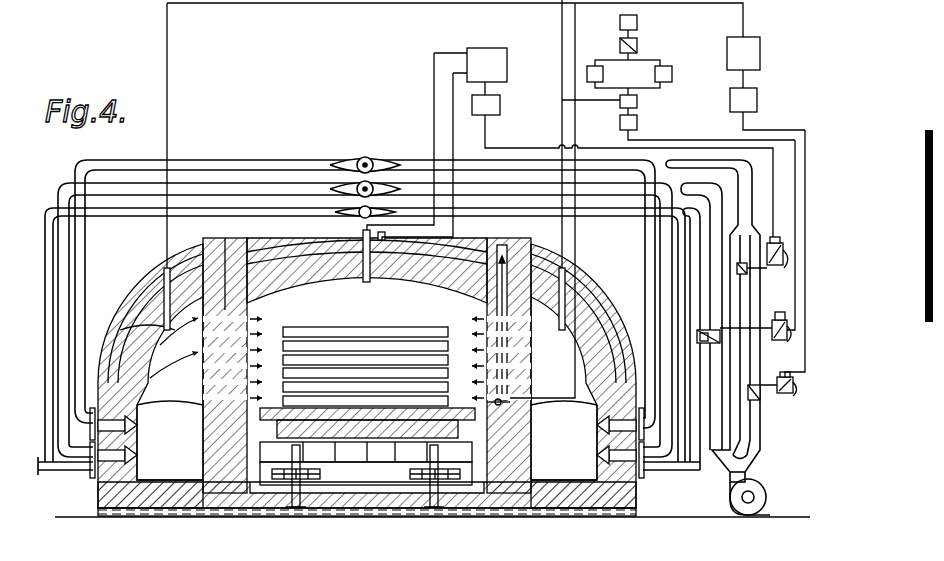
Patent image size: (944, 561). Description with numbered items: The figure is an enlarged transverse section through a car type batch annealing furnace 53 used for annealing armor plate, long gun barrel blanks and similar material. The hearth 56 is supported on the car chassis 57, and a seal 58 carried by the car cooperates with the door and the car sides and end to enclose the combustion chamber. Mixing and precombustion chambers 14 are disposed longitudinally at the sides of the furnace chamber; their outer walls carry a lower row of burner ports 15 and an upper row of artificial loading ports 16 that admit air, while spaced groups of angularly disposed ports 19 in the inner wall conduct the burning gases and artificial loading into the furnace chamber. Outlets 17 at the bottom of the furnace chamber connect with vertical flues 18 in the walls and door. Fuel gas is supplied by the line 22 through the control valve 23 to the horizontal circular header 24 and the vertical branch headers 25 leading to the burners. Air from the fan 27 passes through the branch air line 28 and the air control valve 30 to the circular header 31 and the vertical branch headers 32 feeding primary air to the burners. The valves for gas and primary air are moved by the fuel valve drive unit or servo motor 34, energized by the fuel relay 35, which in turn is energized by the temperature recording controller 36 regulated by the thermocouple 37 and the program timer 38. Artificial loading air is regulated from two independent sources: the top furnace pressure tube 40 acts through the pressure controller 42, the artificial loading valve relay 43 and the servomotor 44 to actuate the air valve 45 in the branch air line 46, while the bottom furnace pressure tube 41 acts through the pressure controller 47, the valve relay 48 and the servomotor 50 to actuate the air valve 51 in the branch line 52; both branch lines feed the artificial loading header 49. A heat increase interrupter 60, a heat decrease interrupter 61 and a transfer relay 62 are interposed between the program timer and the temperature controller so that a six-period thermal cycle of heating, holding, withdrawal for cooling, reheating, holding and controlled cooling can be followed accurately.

The mixing and precombustion chamber 14 is at (565, 440).
The burner ports 15 is at (594, 456).
The artificial loading ports 16 is at (594, 426).
The outlets 17 is at (496, 400).
The vertical flues 18 is at (505, 240).
The ports 19 is at (205, 340).
The line 22 is at (707, 470).
The control valve 23 is at (700, 333).
The horizontal circular header 24 is at (355, 214).
The vertical branch headers 25 is at (664, 262).
The fan 27 is at (767, 497).
The branch air line 28 is at (746, 462).
The air control valve 30 is at (705, 340).
The circular header 31 is at (690, 183).
The vertical branch headers 32 is at (650, 242).
The fuel valve drive unit or servo motor 34 is at (780, 340).
The fuel relay 35 is at (637, 122).
The temperature recording controller 36 is at (637, 100).
The thermocouple 37 is at (562, 268).
The program timer 38 is at (637, 22).
The top furnace pressure tube 40 is at (370, 282).
The bottom furnace pressure tube 41 is at (512, 402).
The pressure controller 42 is at (470, 71).
The artificial loading valve relay 43 is at (499, 106).
The artificial loading valve drive unit or servomotor 44 is at (776, 266).
The air valve 45 is at (744, 276).
The branch air line 46 is at (745, 448).
The pressure controller 47 is at (743, 62).
The valve relay 48 is at (757, 102).
The artificial loading header 49 is at (672, 160).
The servomotor 50 is at (760, 396).
The air valve 51 is at (752, 435).
The branch line 52 is at (757, 430).
The car type batch annealing furnace 53 is at (125, 330).
The hearth 56 is at (368, 470).
The car chassis 57 is at (430, 478).
The seal 58 is at (440, 505).
The heat increase interrupter 60 is at (593, 68).
The heat decrease interrupter 61 is at (664, 66).
The transfer relay 62 is at (637, 45).